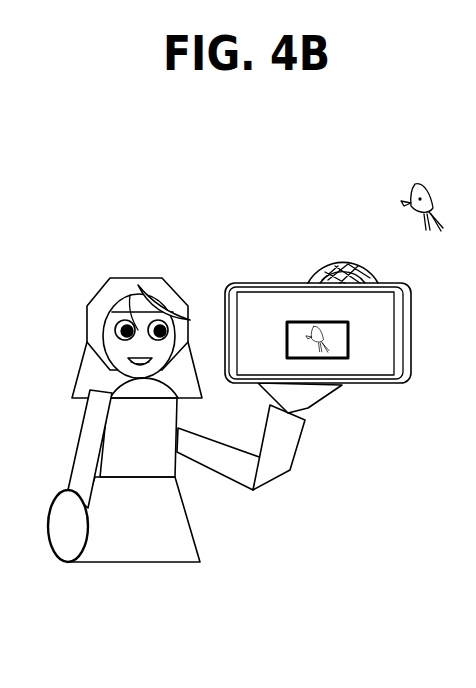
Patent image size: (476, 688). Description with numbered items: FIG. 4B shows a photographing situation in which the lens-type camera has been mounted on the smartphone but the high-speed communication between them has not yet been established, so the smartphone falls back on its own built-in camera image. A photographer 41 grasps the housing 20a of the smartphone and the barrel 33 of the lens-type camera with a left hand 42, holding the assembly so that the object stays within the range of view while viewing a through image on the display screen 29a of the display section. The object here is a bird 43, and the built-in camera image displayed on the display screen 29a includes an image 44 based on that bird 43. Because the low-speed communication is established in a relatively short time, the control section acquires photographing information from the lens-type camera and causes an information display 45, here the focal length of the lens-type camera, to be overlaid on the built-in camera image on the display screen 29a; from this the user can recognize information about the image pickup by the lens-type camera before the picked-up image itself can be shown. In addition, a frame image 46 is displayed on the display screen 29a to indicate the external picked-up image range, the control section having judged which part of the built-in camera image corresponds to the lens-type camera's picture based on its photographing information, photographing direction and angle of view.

The housing 20a is at (339, 350).
The display screen 29a is at (385, 333).
The barrel 33 is at (342, 266).
The photographer 41 is at (130, 555).
The left hand 42 is at (285, 452).
The bird 43 is at (416, 188).
The image 44 is at (309, 347).
The information display 45 is at (228, 298).
The frame image 46 is at (348, 340).